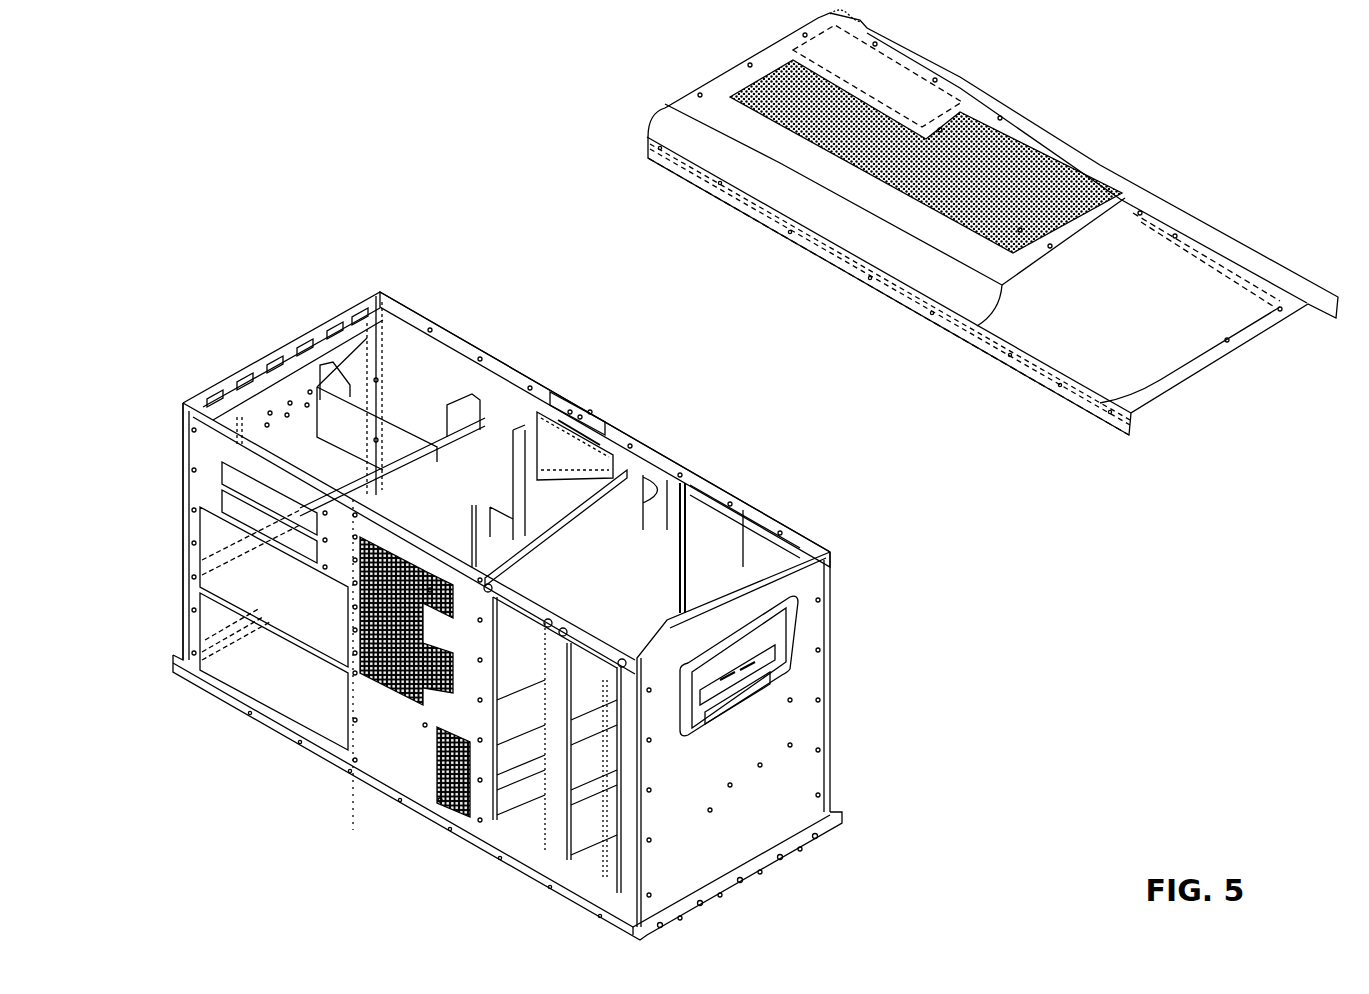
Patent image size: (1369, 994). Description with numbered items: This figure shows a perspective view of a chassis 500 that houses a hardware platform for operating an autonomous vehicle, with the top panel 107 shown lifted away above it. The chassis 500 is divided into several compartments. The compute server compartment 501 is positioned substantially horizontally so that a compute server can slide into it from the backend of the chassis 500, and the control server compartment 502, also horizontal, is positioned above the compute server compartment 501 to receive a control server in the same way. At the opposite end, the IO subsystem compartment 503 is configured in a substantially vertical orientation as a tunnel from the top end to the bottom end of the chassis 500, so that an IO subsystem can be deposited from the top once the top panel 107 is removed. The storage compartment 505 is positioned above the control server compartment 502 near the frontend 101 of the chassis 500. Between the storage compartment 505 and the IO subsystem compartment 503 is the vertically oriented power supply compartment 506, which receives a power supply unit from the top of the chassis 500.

The top panel 107 is at (683, 128).
The chassis 500 is at (610, 616).
The compute server compartment 501 is at (357, 720).
The control server compartment 502 is at (293, 595).
The IO subsystem compartment 503 is at (695, 520).
The storage compartment 505 is at (395, 359).
The power supply compartment 506 is at (575, 458).
The frontend 101 is at (293, 445).